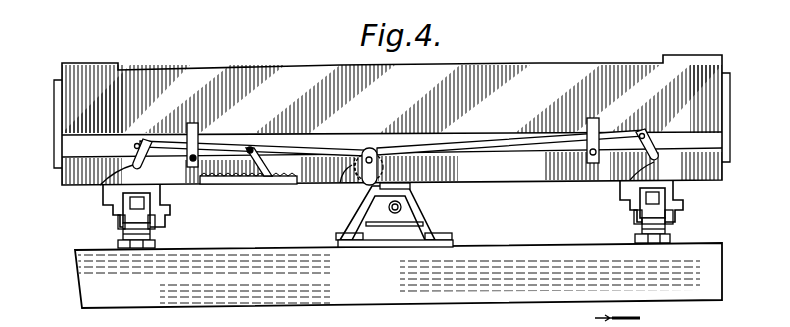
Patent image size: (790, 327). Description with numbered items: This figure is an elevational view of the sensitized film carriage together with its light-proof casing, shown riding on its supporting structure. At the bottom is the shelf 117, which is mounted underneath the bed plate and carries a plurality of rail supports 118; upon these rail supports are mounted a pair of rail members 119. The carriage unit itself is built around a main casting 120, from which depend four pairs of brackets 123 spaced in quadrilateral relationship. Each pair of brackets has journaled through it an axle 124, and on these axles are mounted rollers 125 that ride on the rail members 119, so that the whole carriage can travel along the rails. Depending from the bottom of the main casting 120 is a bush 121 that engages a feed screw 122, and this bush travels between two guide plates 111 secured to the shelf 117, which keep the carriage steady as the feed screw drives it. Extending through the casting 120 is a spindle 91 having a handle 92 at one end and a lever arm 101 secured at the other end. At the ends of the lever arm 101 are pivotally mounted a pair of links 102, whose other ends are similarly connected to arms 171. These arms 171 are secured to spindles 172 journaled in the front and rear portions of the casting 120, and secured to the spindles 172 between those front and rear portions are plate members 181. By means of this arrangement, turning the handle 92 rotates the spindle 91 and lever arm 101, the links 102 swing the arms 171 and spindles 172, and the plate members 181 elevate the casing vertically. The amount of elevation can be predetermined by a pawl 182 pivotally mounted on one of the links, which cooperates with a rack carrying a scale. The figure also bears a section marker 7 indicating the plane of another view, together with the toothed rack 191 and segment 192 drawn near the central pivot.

The main casting 120 is at (568, 80).
The links 102 is at (240, 141).
The lever arm 101 is at (368, 148).
The spindle 91 is at (380, 160).
The handle 92 is at (366, 183).
The gear segment 191 is at (345, 183).
The rack 192 is at (290, 182).
The plate members 181 is at (190, 124).
The pawl 182 is at (264, 178).
The arms 171 is at (140, 145).
The spindles 172 is at (102, 186).
The depending brackets 123 is at (160, 196).
The axles 124 is at (150, 232).
The rollers 125 is at (122, 232).
The rail supports 118 is at (145, 247).
The rail members 119 is at (133, 248).
The guide plates 111 is at (420, 222).
The bush 121 is at (370, 216).
The feed screw 122 is at (402, 208).
The shelf 117 is at (452, 242).
The section line 7 is at (611, 318).